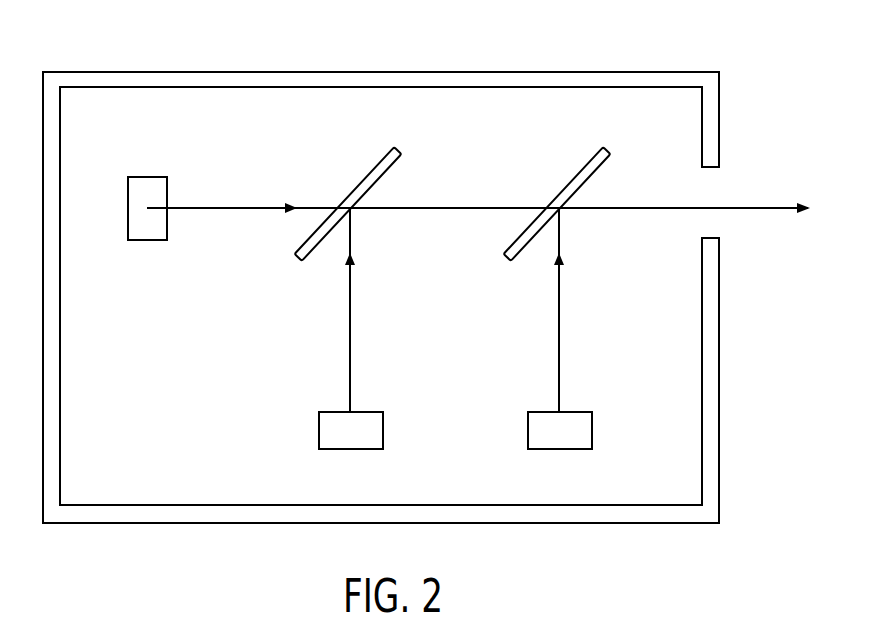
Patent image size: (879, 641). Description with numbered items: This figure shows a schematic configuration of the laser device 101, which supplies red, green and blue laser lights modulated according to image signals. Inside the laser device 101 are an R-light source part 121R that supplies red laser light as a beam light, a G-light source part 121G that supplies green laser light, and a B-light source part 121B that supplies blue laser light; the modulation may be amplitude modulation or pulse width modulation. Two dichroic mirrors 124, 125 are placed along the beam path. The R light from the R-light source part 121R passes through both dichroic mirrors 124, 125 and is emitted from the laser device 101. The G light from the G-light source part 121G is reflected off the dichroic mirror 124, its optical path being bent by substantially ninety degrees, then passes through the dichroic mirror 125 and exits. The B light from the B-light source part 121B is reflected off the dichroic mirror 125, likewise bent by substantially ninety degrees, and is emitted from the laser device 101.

The laser device 101 is at (662, 77).
The R-light source part 121R is at (152, 183).
The G-light source part 121G is at (375, 433).
The B-light source part 121B is at (584, 433).
The dichroic mirror 124 is at (367, 180).
The dichroic mirror 125 is at (576, 180).